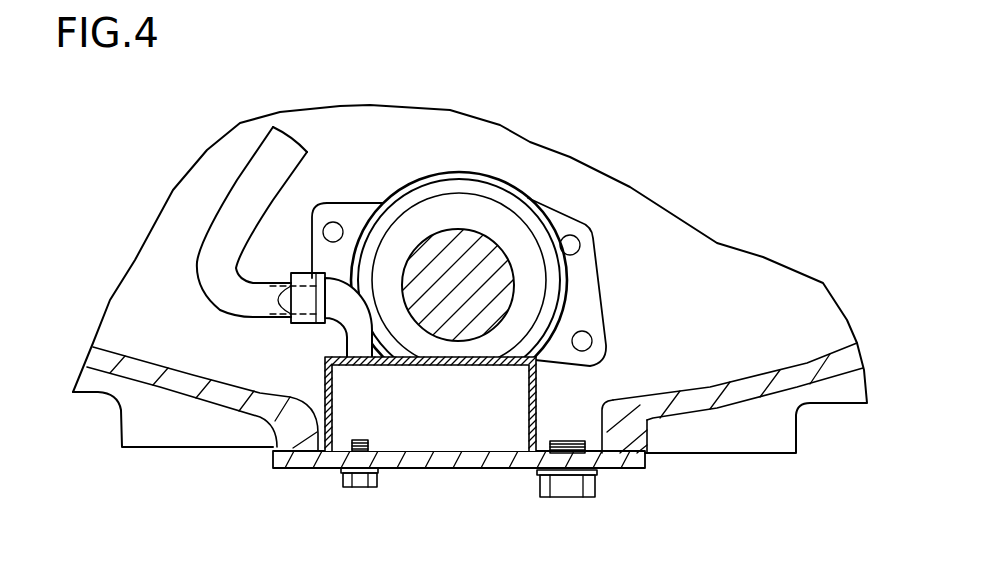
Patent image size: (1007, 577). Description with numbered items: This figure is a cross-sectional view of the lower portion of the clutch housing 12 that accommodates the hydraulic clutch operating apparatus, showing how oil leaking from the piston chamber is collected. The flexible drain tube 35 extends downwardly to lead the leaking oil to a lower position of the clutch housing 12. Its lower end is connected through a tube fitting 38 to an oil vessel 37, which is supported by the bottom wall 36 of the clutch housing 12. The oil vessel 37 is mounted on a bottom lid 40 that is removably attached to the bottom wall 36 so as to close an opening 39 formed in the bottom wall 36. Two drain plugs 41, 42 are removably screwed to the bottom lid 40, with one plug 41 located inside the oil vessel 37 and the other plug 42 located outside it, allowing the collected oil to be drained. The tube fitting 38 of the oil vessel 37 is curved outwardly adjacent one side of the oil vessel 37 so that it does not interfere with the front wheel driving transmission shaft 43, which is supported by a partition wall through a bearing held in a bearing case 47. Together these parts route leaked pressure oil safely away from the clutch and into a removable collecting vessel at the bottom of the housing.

The clutch housing 12 is at (828, 370).
The drain tube 35 is at (233, 197).
The bottom wall 36 is at (630, 447).
The oil vessel 37 is at (537, 408).
The tube fitting 38 is at (343, 330).
The opening 39 is at (318, 465).
The bottom lid 40 is at (450, 460).
The drain plug 41 is at (358, 488).
The drain plug 42 is at (570, 463).
The front wheel driving transmission shaft 43 is at (482, 252).
The bearing case 47 is at (550, 298).